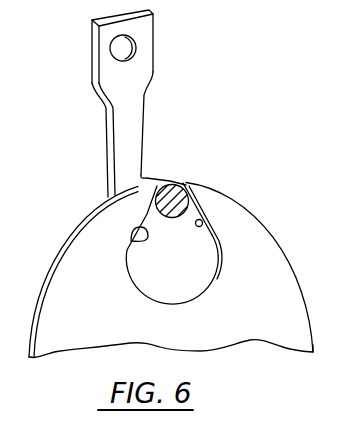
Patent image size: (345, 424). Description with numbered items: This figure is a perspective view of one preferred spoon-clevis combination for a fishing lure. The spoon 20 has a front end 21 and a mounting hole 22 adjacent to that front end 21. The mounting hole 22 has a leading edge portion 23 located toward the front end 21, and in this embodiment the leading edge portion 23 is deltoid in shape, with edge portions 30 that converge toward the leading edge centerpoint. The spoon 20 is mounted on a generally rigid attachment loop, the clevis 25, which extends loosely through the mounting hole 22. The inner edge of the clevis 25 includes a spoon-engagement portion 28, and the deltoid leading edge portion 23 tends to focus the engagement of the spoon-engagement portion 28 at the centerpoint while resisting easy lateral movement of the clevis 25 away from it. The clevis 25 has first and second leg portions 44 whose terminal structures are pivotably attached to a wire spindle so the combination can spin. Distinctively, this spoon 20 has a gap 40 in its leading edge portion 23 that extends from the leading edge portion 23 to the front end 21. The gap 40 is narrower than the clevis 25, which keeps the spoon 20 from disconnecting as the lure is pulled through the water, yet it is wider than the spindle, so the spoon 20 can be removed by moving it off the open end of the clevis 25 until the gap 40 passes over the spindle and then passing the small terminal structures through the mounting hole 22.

The spoon 20 is at (178, 258).
The front end 21 is at (203, 185).
The mounting hole 22 is at (150, 268).
The leading edge portion 23 is at (203, 223).
The clevis 25 is at (138, 121).
The spoon-engagement portion 28 is at (146, 176).
The edge portions 30 is at (130, 239).
The gap 40 is at (175, 180).
The leg portion 44 is at (133, 108).